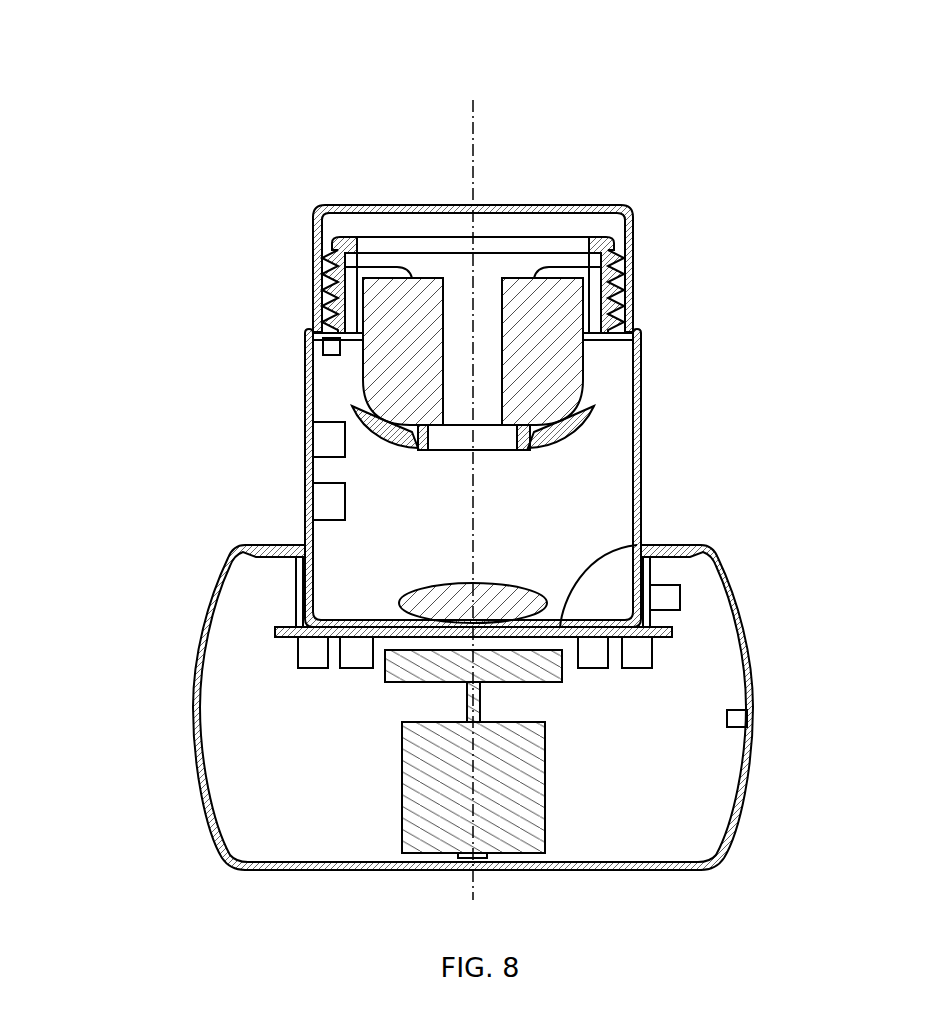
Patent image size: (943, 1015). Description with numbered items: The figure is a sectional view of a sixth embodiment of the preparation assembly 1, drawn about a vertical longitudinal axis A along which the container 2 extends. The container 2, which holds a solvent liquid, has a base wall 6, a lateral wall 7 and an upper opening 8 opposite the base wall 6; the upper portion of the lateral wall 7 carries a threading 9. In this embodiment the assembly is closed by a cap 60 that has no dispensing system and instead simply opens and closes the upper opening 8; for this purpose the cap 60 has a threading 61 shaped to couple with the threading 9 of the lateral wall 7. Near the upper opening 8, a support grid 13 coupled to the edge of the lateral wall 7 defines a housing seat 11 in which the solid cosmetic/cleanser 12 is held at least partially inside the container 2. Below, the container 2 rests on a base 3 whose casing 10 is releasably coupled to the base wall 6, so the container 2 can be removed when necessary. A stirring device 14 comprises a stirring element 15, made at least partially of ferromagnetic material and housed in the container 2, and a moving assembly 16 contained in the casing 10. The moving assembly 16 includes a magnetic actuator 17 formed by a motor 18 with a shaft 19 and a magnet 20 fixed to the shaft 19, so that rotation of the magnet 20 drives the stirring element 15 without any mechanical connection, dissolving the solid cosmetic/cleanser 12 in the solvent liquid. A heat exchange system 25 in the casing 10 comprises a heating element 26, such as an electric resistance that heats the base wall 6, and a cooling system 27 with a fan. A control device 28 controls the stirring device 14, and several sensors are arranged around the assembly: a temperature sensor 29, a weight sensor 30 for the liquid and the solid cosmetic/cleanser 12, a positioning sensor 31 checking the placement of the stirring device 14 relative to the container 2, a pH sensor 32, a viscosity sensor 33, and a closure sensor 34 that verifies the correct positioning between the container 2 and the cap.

The preparation assembly 1 is at (180, 186).
The container 2 is at (272, 389).
The base 3 is at (435, 740).
The base wall 6 is at (635, 546).
The lateral wall 7 is at (312, 408).
The upper opening 8 is at (532, 234).
The threading 9 is at (318, 280).
The casing 10 is at (203, 813).
The housing seat 11 is at (546, 443).
The solid cosmetic/cleanser 12 is at (553, 370).
The support grid 13 is at (578, 416).
The stirring device 14 is at (360, 597).
The stirring element 15 is at (437, 600).
The moving assembly 16 is at (580, 815).
The magnetic actuator 17 is at (381, 806).
The motor 18 is at (505, 820).
The shaft 19 is at (467, 710).
The magnet 20 is at (410, 673).
The heat exchange system 25 is at (585, 716).
The heating element 26 is at (355, 664).
The cooling system 27 is at (593, 658).
The control device 28 is at (740, 722).
The temperature sensor 29 is at (315, 659).
The weight sensor 30 is at (638, 654).
The positioning sensor 31 is at (665, 597).
The pH sensor 32 is at (314, 497).
The viscosity sensor 33 is at (314, 440).
The closure sensor 34 is at (314, 346).
The cap 60 is at (381, 184).
The threading 61 is at (660, 250).
The longitudinal axis A is at (475, 148).